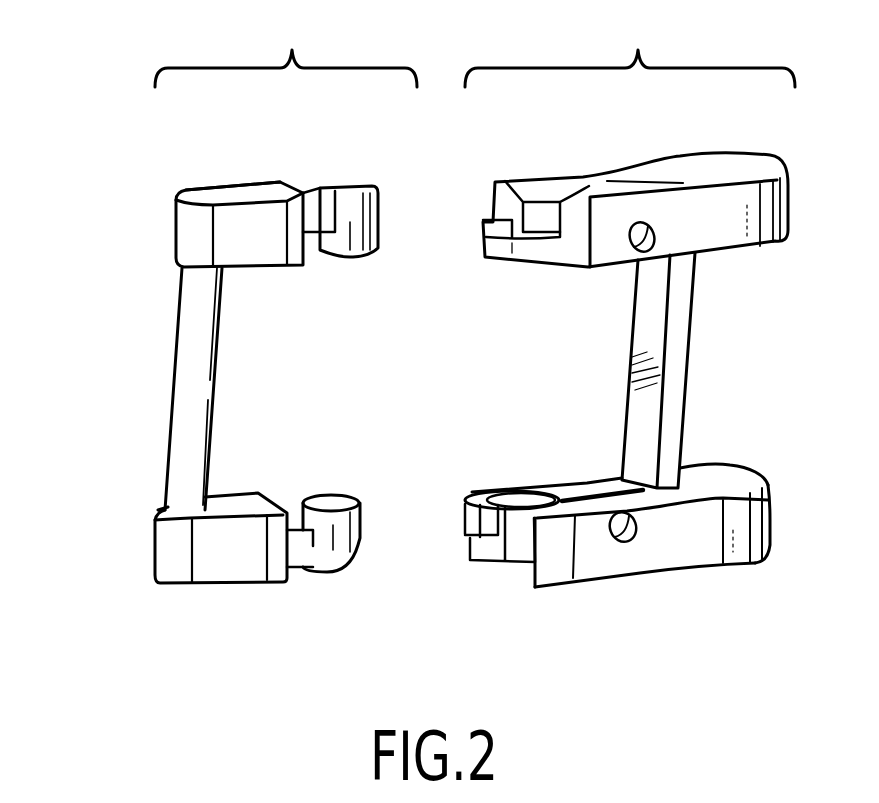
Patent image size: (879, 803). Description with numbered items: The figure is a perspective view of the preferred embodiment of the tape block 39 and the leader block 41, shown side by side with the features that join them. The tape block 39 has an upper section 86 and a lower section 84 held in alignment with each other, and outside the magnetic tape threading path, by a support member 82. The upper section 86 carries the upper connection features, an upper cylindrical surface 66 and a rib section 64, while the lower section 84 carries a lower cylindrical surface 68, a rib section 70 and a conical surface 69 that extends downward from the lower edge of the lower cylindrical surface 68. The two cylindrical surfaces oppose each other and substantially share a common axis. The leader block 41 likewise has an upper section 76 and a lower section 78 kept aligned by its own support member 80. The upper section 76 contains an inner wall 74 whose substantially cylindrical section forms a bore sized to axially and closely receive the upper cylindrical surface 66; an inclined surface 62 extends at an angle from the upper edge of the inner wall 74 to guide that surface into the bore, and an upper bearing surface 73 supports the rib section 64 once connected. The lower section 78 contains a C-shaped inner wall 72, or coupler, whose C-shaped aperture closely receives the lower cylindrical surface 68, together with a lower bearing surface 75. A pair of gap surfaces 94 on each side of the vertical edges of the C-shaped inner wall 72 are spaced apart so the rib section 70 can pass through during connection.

The tape block 39 is at (286, 44).
The leader block 41 is at (630, 43).
The upper section 86 is at (226, 192).
The rib section 64 is at (300, 181).
The upper cylindrical surface 66 is at (381, 208).
The support member 82 is at (180, 380).
The lower section 84 is at (237, 563).
The lower cylindrical surface 68 is at (303, 500).
The conical surface 69 is at (350, 563).
The rib section 70 is at (303, 547).
The inclined surface 62 is at (528, 187).
The inner wall 74 is at (541, 210).
The upper bearing surface 73 is at (490, 221).
The upper section 76 is at (538, 260).
The support member 80 is at (678, 413).
The C-shaped inner wall 72 is at (520, 513).
The lower section 78 is at (482, 503).
The lower bearing surface 75 is at (470, 537).
The gap surfaces 94 is at (488, 527).